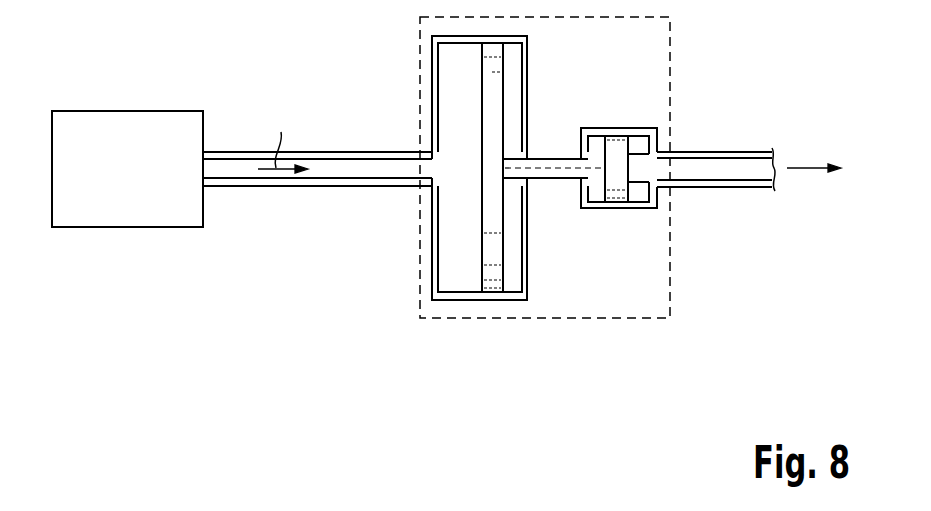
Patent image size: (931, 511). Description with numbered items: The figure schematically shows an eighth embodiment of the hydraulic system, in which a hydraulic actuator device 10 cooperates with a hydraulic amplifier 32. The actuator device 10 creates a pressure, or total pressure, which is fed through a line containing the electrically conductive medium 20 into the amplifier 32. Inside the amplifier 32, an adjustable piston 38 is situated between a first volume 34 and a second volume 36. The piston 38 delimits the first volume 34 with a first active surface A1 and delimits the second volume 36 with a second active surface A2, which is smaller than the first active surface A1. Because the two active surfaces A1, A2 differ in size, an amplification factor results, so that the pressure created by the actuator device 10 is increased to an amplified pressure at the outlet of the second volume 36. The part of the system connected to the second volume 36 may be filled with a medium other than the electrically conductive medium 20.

The hydraulic actuator device 10 is at (125, 104).
The electrically conductive medium 20 is at (352, 167).
The hydraulic amplifier 32 is at (670, 285).
The first volume 34 is at (447, 168).
The second volume 36 is at (711, 172).
The adjustable piston 38 is at (553, 160).
The first active surface A1 is at (453, 268).
The second active surface A2 is at (625, 138).